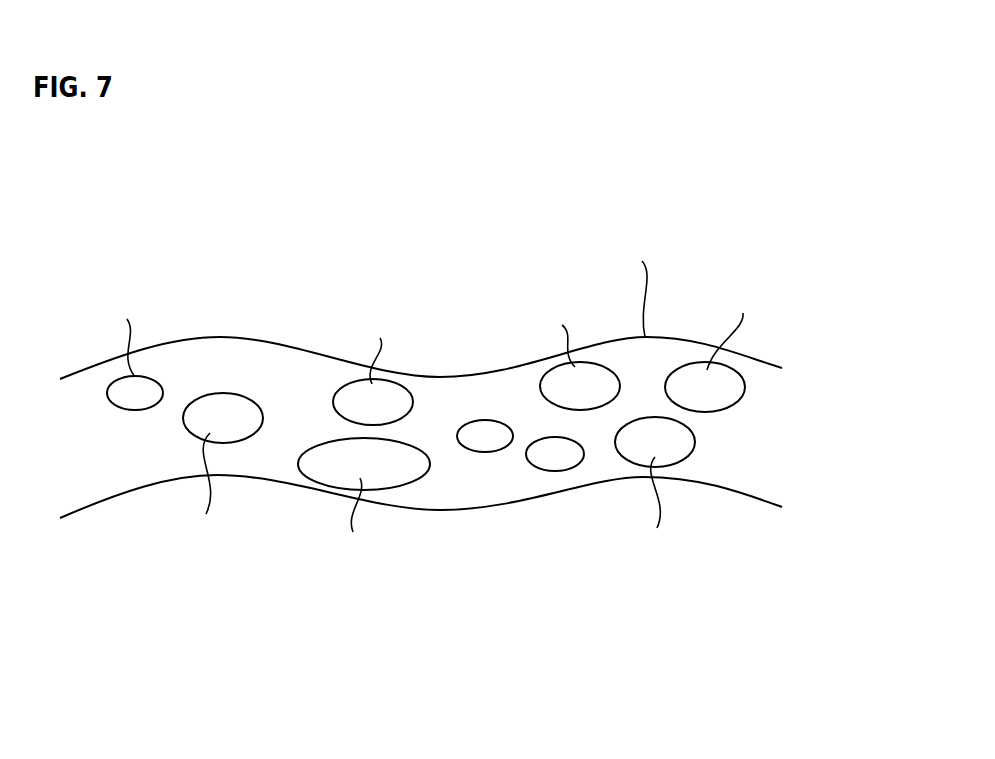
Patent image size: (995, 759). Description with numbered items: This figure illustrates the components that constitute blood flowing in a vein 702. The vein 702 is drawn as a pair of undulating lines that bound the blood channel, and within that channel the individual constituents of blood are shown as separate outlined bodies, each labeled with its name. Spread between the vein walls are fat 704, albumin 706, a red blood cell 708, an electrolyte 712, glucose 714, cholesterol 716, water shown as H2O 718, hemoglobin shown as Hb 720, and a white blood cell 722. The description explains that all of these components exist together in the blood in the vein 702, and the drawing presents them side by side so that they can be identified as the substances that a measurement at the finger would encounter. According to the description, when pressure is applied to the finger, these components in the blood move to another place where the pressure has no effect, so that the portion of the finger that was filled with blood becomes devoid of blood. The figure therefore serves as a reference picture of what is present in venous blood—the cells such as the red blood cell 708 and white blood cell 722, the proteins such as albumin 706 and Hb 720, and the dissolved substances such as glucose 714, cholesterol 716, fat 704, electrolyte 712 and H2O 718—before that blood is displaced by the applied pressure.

The vein 702 is at (600, 232).
The fat 704 is at (113, 287).
The albumin 706 is at (350, 308).
The red blood cell 708 is at (527, 272).
The electrolyte 712 is at (743, 280).
The glucose 714 is at (192, 542).
The cholesterol 716 is at (355, 567).
The H2O 718 is at (503, 450).
The Hb 720 is at (547, 470).
The white blood cell 722 is at (667, 560).